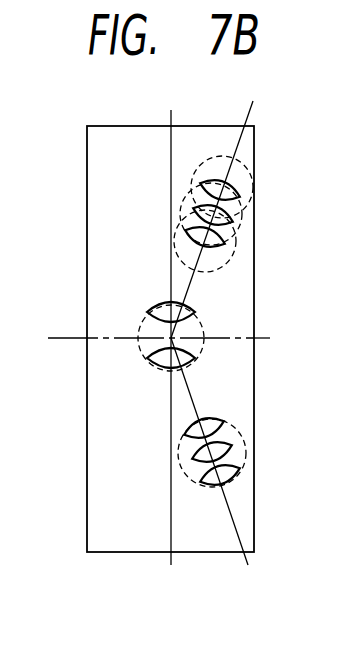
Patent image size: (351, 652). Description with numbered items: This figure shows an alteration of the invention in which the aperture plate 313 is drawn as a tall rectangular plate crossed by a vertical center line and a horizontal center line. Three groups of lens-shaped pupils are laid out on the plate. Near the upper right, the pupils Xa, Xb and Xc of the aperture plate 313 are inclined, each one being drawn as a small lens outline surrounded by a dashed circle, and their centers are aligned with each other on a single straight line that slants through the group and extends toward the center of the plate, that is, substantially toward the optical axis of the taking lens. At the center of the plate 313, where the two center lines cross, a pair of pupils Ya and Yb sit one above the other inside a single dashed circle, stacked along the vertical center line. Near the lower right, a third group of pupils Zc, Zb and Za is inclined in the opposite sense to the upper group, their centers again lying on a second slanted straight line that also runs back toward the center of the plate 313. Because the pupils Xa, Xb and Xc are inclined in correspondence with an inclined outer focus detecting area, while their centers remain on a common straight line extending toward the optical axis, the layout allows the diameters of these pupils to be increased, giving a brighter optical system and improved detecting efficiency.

The aperture plate 313 is at (112, 137).
The pupil Xa is at (240, 170).
The pupil Xb is at (232, 215).
The pupil Xc is at (218, 251).
The lens Ya is at (194, 308).
The lens Yb is at (194, 361).
The lens Za is at (231, 478).
The lens Zb is at (228, 447).
The lens Zc is at (218, 421).